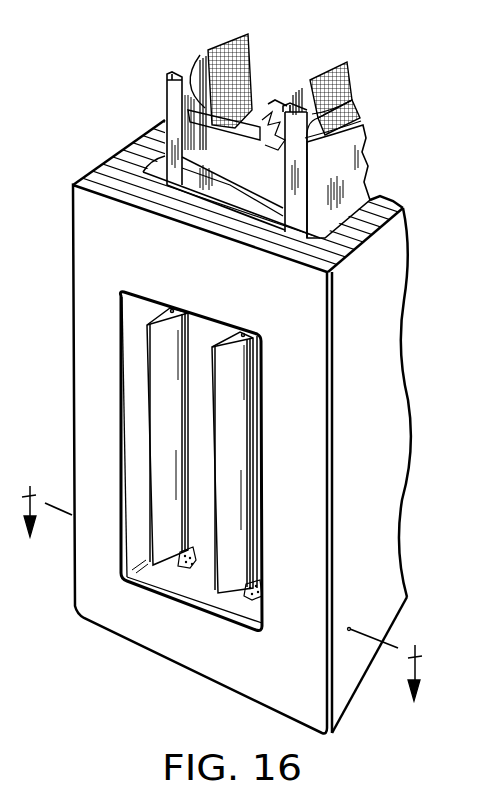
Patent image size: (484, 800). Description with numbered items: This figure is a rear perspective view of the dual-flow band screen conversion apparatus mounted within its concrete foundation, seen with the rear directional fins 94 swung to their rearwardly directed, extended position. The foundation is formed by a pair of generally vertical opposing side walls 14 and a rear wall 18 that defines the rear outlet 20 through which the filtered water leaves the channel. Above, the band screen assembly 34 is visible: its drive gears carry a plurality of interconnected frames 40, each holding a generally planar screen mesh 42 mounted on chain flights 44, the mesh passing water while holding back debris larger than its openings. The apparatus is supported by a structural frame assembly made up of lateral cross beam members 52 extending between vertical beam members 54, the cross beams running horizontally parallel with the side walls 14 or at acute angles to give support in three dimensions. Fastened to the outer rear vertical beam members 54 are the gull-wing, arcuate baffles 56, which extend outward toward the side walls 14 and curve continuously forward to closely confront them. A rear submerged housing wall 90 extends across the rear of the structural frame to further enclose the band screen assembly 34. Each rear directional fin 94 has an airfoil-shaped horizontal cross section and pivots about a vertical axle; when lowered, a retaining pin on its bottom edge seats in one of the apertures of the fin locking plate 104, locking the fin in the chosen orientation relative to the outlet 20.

The side walls 14 is at (403, 357).
The rear wall 18 is at (122, 672).
The rear outlet 20 is at (130, 367).
The band screen assembly 34 is at (360, 58).
The interconnected frames 40 is at (347, 117).
The screen mesh 42 is at (236, 36).
The chain flights 44 is at (203, 100).
The lateral cross beam members 52 is at (232, 127).
The vertical beam members 54 is at (172, 100).
The arcuate baffles 56 is at (363, 163).
The rear submerged housing wall 90 is at (278, 205).
The rear directional fins 94 is at (188, 337).
The fin locking plate 104 is at (190, 556).